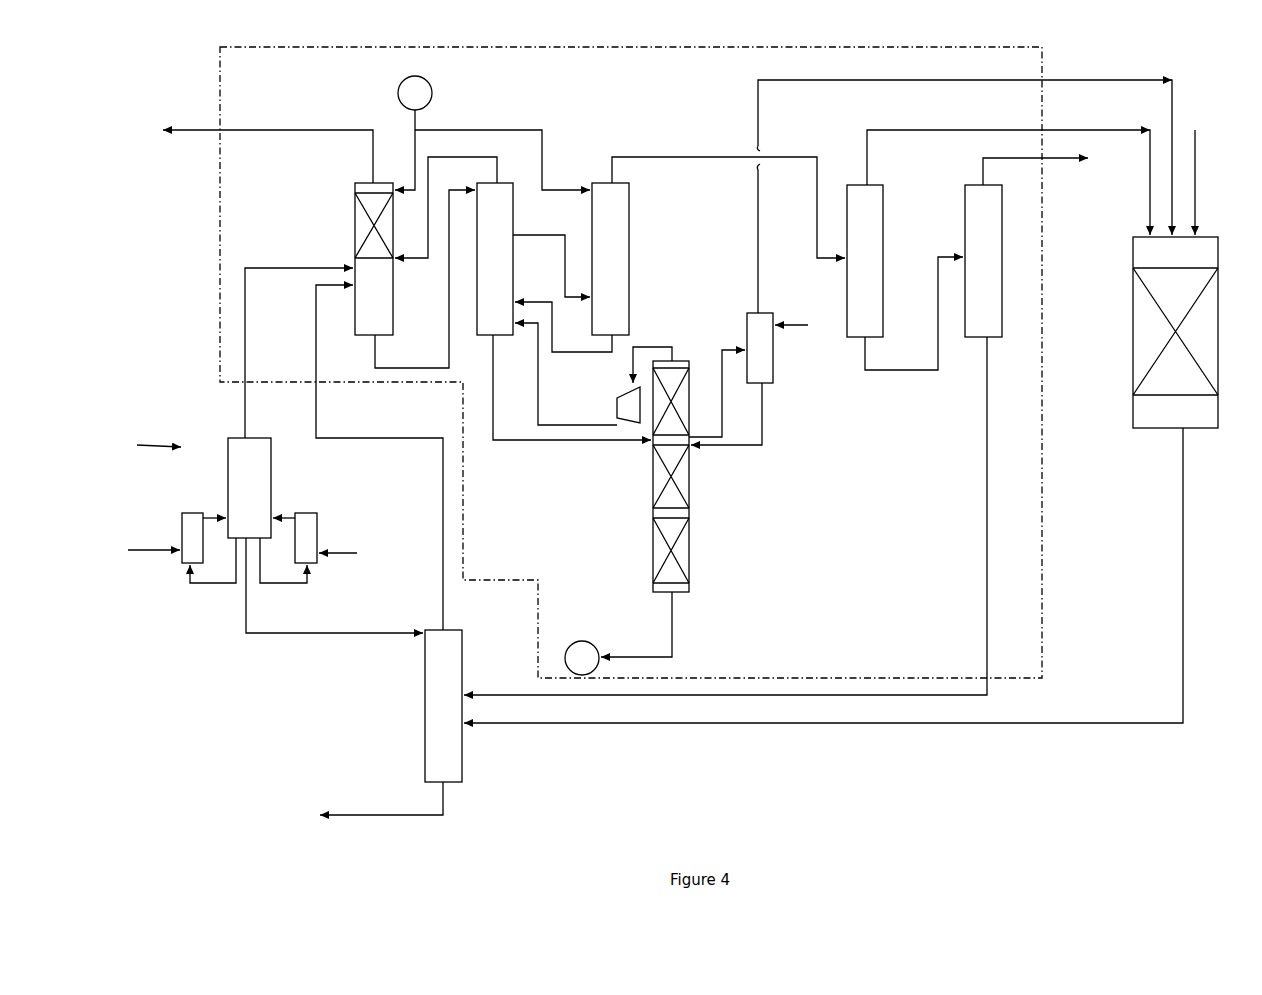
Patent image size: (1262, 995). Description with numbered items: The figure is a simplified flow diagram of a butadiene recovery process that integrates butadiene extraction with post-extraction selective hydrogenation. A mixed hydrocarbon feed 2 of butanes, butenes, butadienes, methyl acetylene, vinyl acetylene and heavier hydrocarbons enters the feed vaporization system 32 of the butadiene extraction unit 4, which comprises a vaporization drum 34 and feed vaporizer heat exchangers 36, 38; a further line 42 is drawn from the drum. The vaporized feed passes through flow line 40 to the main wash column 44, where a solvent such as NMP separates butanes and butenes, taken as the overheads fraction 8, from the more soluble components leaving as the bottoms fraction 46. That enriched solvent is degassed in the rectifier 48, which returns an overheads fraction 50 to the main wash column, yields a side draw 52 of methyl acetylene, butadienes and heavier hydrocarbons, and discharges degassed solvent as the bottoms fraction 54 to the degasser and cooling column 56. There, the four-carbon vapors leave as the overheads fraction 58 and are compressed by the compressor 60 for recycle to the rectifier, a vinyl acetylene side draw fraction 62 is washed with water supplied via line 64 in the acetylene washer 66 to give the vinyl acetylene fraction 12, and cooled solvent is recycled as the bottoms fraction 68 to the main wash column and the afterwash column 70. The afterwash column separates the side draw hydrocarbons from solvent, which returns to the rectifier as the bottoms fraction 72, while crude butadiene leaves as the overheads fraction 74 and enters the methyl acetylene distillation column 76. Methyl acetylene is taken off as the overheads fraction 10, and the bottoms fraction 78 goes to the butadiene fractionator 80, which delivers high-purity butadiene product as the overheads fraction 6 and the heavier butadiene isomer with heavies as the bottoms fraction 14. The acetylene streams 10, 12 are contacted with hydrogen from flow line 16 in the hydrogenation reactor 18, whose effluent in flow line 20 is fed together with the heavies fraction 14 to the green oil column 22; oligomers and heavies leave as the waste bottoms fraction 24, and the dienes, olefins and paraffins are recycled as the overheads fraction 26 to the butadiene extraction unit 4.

The mixed hydrocarbon feed 2 is at (242, 543).
The butadiene extraction unit 4 is at (212, 272).
The overheads fraction 6 is at (1035, 162).
The overheads fraction 8 is at (268, 147).
The overheads fraction 10 is at (1008, 173).
The vinyl acetylene fraction 12 is at (964, 185).
The bottoms fraction 14 is at (738, 516).
The flow line 16 is at (1208, 182).
The hydrogenation reactor 18 is at (1175, 332).
The flow line 20 is at (837, 575).
The green oil column 22 is at (443, 706).
The bottoms fraction 24 is at (381, 798).
The overheads fraction 26 is at (379, 457).
The feed vaporization system 32 is at (147, 445).
The vaporization drum 34 is at (249, 488).
The heat exchanger 36 is at (209, 548).
The heat exchanger 38 is at (288, 548).
The flow line 40 is at (299, 343).
The bottoms stream 42 is at (334, 585).
The main wash column 44 is at (374, 259).
The bottoms fraction 46 is at (425, 279).
The rectifier 48 is at (495, 259).
The overheads fraction 50 is at (446, 207).
The side draw 52 is at (551, 256).
The bottoms fraction 54 is at (572, 388).
The degasser and cooling column 56 is at (691, 518).
The overheads fraction 58 is at (652, 356).
The compressor 60 is at (577, 374).
The side draw fraction 62 is at (717, 393).
The line 64 is at (791, 316).
The acetylene washer 66 is at (732, 379).
The bottoms fraction 68 is at (533, 375).
The afterwash column 70 is at (610, 259).
The bottoms fraction 72 is at (563, 327).
The overheads fraction 74 is at (728, 196).
The methyl acetylene distillation column 76 is at (865, 261).
The bottoms fraction 78 is at (914, 313).
The butadiene fractionator 80 is at (983, 261).